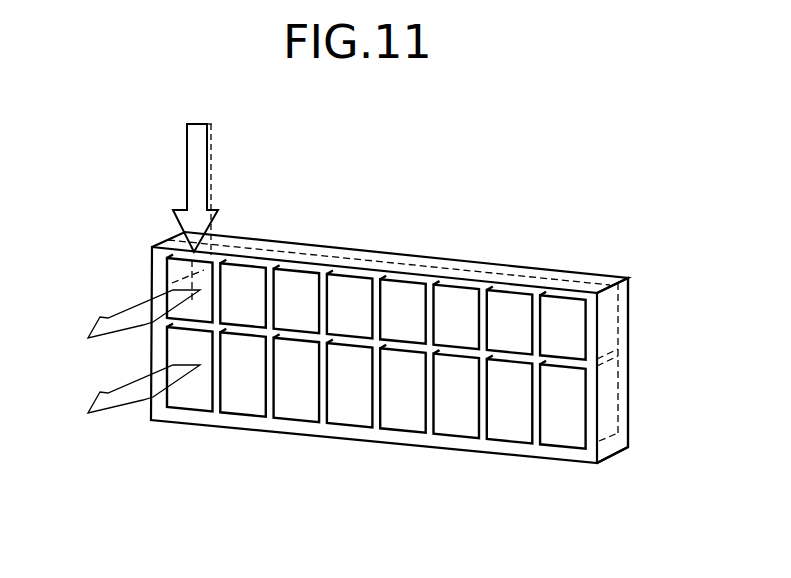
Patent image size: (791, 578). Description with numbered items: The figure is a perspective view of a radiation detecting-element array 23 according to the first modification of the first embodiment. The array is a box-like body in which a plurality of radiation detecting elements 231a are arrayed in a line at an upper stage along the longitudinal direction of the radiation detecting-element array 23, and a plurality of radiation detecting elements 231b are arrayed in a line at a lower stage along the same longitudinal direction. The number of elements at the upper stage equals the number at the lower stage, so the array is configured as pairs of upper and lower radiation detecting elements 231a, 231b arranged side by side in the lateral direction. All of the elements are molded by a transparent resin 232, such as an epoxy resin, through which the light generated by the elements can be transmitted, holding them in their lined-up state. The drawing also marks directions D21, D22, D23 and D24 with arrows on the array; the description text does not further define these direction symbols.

The radiation detecting-element array 23 is at (481, 164).
The radiation detecting elements 231a is at (361, 261).
The radiation detecting elements 231b is at (336, 436).
The transparent resin 232 is at (630, 372).
The insertion direction D21 is at (187, 163).
The removal direction D22 is at (96, 322).
The insertion direction D23 is at (222, 146).
The removal direction D24 is at (96, 397).